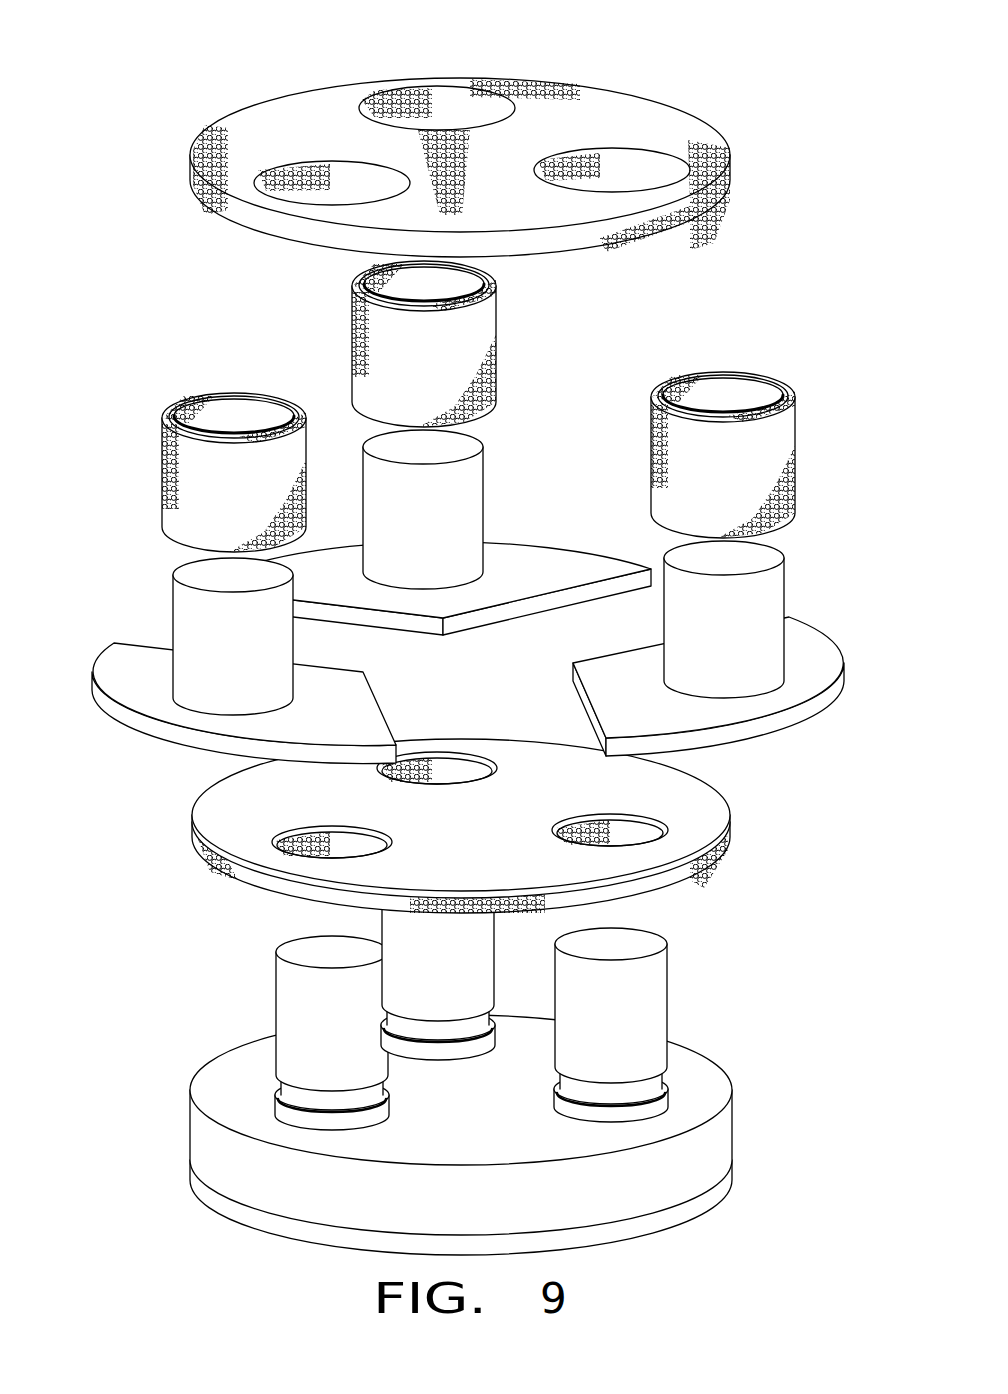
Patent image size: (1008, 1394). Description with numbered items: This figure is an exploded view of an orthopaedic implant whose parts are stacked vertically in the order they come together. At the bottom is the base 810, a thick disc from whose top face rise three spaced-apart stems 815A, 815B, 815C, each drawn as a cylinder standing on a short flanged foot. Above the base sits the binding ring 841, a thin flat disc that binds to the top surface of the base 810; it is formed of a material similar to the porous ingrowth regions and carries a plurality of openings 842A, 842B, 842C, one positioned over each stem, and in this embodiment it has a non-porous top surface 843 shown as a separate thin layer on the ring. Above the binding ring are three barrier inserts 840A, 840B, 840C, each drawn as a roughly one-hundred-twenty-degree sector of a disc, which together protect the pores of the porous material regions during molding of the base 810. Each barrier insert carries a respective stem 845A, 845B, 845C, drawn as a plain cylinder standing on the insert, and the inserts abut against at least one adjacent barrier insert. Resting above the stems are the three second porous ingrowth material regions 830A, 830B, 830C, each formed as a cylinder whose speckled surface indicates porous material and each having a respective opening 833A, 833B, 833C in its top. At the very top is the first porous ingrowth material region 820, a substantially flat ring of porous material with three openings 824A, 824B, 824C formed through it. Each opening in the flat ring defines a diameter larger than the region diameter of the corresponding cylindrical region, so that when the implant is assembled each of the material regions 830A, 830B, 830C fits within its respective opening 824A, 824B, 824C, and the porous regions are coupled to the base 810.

The base 810 is at (742, 1126).
The stem 815A is at (293, 1008).
The stem 815B is at (478, 948).
The stem 815C is at (653, 1003).
The first porous ingrowth material region 820 is at (479, 130).
The opening 824A is at (283, 165).
The opening 824B is at (433, 100).
The opening 824C is at (653, 163).
The second porous ingrowth material region 830A is at (180, 445).
The second porous ingrowth material region 830B is at (421, 344).
The second porous ingrowth material region 830C is at (785, 424).
The opening 833A is at (230, 412).
The opening 833B is at (457, 283).
The opening 833C is at (732, 387).
The barrier insert 840A is at (108, 673).
The barrier insert 840B is at (548, 557).
The barrier insert 840C is at (825, 662).
The binding ring 841 is at (483, 785).
The opening 842A is at (308, 832).
The opening 842B is at (445, 763).
The opening 842C is at (637, 828).
The non-porous top surface 843 is at (692, 838).
The stem 845A is at (182, 612).
The stem 845B is at (475, 477).
The stem 845C is at (777, 588).